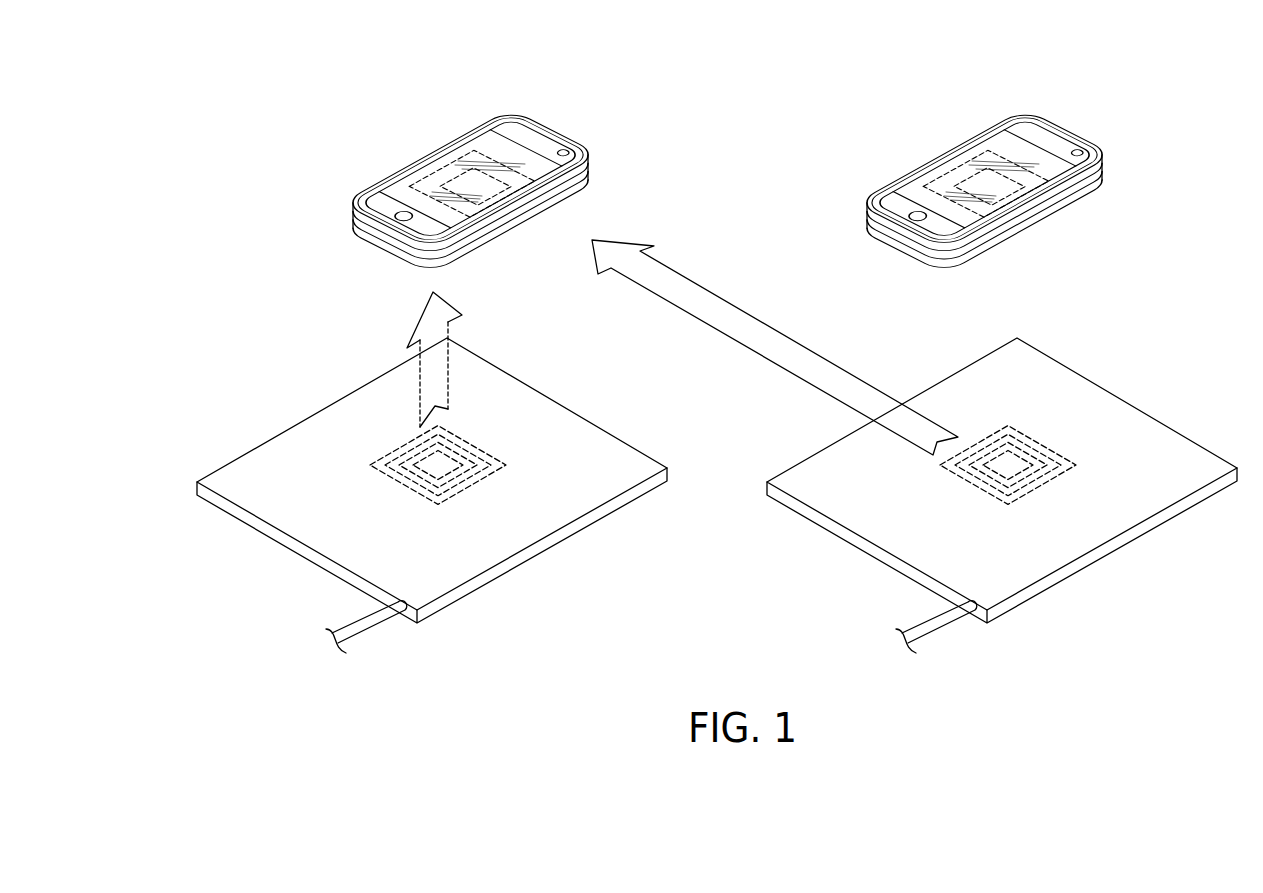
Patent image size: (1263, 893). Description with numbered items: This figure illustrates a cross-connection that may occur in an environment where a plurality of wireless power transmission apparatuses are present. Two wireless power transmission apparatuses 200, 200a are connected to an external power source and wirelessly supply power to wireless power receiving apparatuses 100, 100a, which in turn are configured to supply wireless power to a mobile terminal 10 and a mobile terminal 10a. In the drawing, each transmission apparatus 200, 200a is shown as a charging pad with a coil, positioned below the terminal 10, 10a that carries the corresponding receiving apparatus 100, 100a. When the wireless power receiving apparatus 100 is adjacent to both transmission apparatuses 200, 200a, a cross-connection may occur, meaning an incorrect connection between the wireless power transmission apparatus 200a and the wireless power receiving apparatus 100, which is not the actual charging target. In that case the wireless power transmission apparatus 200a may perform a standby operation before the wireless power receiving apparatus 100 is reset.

The mobile terminal 10 is at (560, 138).
The wireless power receiving apparatus 100 is at (447, 172).
The mobile terminal 10a is at (1074, 138).
The wireless power receiving apparatus 100a is at (961, 172).
The wireless power transmission apparatus 200 is at (533, 519).
The wireless power transmission apparatus 200a is at (1103, 519).